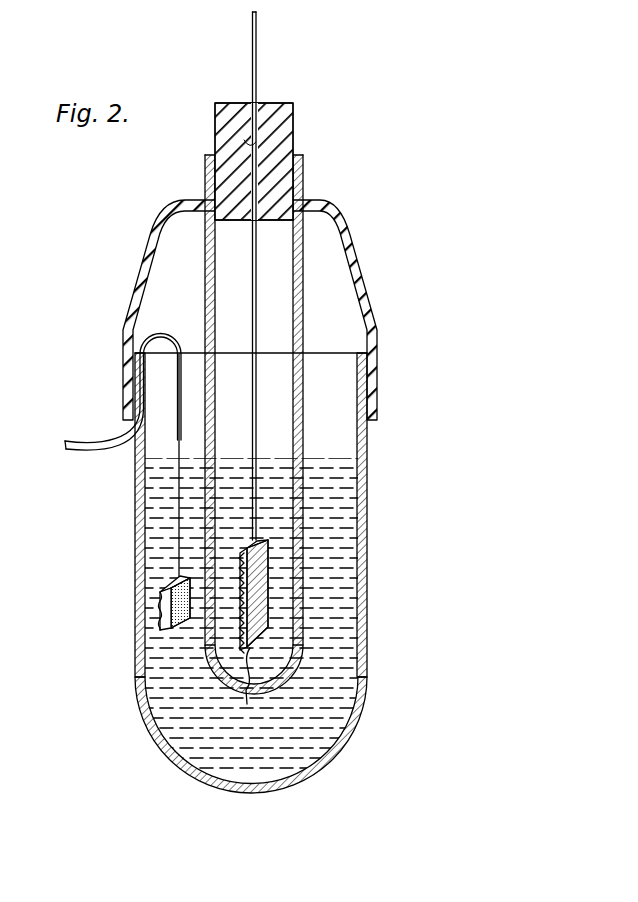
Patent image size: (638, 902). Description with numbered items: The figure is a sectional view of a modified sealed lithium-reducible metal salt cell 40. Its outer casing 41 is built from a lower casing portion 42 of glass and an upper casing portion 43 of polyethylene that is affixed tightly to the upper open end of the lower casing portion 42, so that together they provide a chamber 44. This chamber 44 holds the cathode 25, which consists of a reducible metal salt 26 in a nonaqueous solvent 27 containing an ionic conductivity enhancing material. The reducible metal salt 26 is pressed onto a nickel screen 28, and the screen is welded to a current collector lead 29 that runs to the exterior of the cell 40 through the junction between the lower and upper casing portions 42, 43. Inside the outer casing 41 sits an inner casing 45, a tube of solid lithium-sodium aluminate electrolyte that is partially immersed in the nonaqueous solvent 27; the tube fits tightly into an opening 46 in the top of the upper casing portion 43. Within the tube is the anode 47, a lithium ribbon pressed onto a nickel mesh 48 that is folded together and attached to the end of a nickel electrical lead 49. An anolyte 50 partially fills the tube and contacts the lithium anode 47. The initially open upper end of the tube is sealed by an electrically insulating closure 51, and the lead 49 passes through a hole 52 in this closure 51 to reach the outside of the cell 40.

The cathode 25 is at (152, 591).
The reducible metal salt 26 is at (186, 621).
The nonaqueous solvent 27 is at (333, 688).
The nickel screen 28 is at (163, 629).
The current collector lead 29 is at (90, 440).
The sealed lithium-reducible metal salt cell 40 is at (140, 767).
The outer casing 41 is at (372, 628).
The lower casing portion 42 is at (367, 474).
The upper casing portion 43 is at (368, 282).
The chamber 44 is at (335, 428).
The inner casing 45 is at (303, 256).
The opening 46 is at (288, 168).
The anode 47 is at (251, 688).
The nickel mesh 48 is at (262, 567).
The nickel electrical lead 49 is at (258, 60).
The anolyte 50 is at (272, 500).
The electrically insulating closure 51 is at (293, 110).
The hole 52 is at (254, 144).